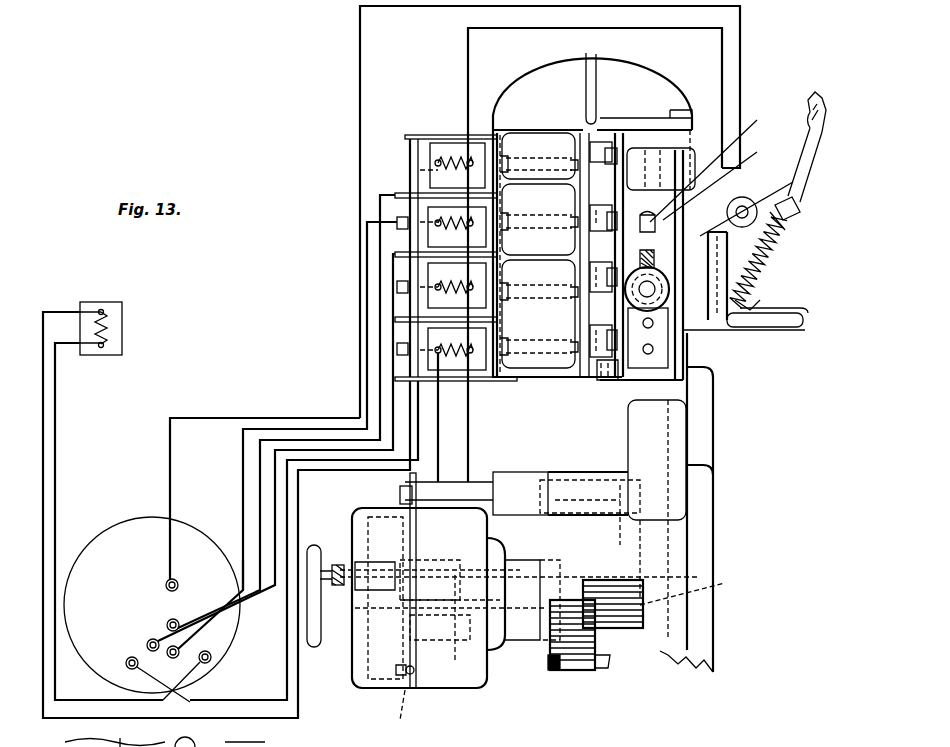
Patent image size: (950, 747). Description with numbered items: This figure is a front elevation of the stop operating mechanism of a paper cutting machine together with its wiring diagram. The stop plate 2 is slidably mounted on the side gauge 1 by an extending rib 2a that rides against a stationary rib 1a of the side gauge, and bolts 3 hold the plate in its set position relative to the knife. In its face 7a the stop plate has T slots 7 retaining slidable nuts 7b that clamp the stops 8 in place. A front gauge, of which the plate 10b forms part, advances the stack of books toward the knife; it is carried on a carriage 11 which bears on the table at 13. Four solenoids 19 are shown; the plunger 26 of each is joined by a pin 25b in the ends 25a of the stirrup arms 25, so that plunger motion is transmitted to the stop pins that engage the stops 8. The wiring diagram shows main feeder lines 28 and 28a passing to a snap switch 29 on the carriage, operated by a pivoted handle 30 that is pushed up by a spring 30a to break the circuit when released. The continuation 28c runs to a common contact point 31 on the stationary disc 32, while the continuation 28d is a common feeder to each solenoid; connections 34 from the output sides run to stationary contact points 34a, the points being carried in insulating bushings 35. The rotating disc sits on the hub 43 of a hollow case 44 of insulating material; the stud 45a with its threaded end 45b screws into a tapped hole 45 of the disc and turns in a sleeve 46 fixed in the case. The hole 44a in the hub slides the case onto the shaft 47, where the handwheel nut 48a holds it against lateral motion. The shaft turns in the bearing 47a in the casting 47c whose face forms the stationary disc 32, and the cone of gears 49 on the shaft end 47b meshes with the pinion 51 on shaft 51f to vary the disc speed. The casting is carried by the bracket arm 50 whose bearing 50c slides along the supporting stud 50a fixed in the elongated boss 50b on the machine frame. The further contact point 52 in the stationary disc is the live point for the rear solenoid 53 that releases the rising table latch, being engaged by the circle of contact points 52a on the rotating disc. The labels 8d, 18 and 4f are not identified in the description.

The side gauge 1 is at (683, 332).
The stationary rib 1a is at (657, 257).
The stop plate 2 is at (618, 162).
The extending rib 2a is at (696, 173).
The bolts 3 is at (706, 160).
The T slots 7 is at (608, 150).
The face of stop plate 7a is at (606, 364).
The nuts 7b is at (612, 215).
The stops 8 is at (600, 230).
The upper contact spring 8d is at (588, 142).
The plate of front gauge 10b is at (775, 312).
The carriage 11 is at (690, 268).
The bearing point 13 is at (703, 326).
The relay frame 18 is at (526, 88).
The solenoids 19 is at (432, 150).
The stirrup arms 25 is at (447, 135).
The ends of arms 25a is at (405, 137).
The pin 25b is at (410, 158).
The plungers 26 is at (397, 222).
The main feeder line 28 is at (765, 285).
The main feeder line 28a is at (766, 298).
The continuation of line 28c is at (742, 72).
The continuation of line 28d is at (720, 112).
The snap switch 29 is at (788, 217).
The pivoted handle 30 is at (810, 110).
The spring 30a is at (778, 245).
The common contact point 31 is at (152, 605).
The stationary disc 32 is at (470, 678).
The connections 34 is at (290, 520).
The stationary contact points 34a is at (150, 640).
The electrical insulating bushings 35 is at (165, 585).
The hub 43 is at (398, 600).
The hollow case 44 is at (390, 688).
The hole 44a is at (412, 616).
The tapped hole 45 is at (392, 576).
The stud 45a is at (342, 563).
The threaded end 45b is at (390, 568).
The sleeve 46 is at (342, 588).
The shaft 47 is at (482, 652).
The bearing 47a is at (510, 636).
The end of shaft 47b is at (699, 585).
The casting 47c is at (510, 586).
The handwheel nut 48a is at (313, 648).
The cone of gears 49 is at (612, 634).
The pin 4f is at (470, 602).
The bracket arm 50 is at (508, 535).
The supporting stud 50a is at (435, 499).
The elongated boss 50b is at (607, 476).
The bearing 50c is at (546, 478).
The pinion 51 is at (565, 673).
The shaft 51f is at (597, 669).
The contact point 52 is at (212, 660).
The circle of contact points 52a is at (410, 690).
The solenoid 53 is at (118, 334).